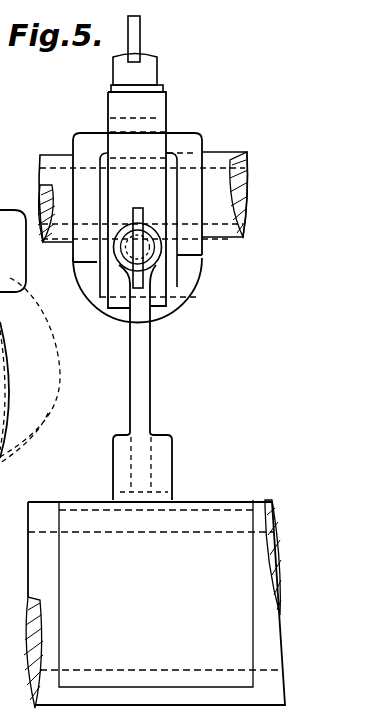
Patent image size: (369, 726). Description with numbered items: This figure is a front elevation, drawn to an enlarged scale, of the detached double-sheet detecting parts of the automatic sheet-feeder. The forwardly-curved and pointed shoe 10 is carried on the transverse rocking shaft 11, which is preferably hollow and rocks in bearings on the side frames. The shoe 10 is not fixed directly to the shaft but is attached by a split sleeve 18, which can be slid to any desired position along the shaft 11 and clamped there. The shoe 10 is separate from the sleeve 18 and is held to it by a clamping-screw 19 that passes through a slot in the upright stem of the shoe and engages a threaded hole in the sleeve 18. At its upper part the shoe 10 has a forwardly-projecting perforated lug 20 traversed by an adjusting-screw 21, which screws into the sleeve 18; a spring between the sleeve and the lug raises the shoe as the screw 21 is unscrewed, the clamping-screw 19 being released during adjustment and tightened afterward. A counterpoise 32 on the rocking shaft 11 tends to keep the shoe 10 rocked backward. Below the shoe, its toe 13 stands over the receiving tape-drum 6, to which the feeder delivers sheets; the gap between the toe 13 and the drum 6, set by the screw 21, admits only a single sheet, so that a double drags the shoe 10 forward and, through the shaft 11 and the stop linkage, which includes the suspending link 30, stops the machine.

The adjusting-screw 21 is at (147, 65).
The perforated lug 20 is at (137, 200).
The rocking shaft 11 is at (223, 153).
The split sleeve 18 is at (137, 215).
The counterpoise 32 is at (188, 288).
The clamping-screw 19 is at (157, 253).
The shoe 10 is at (150, 382).
The toe 13 is at (173, 483).
The receiving tape-drum 6 is at (154, 604).
The link 30 is at (30, 402).